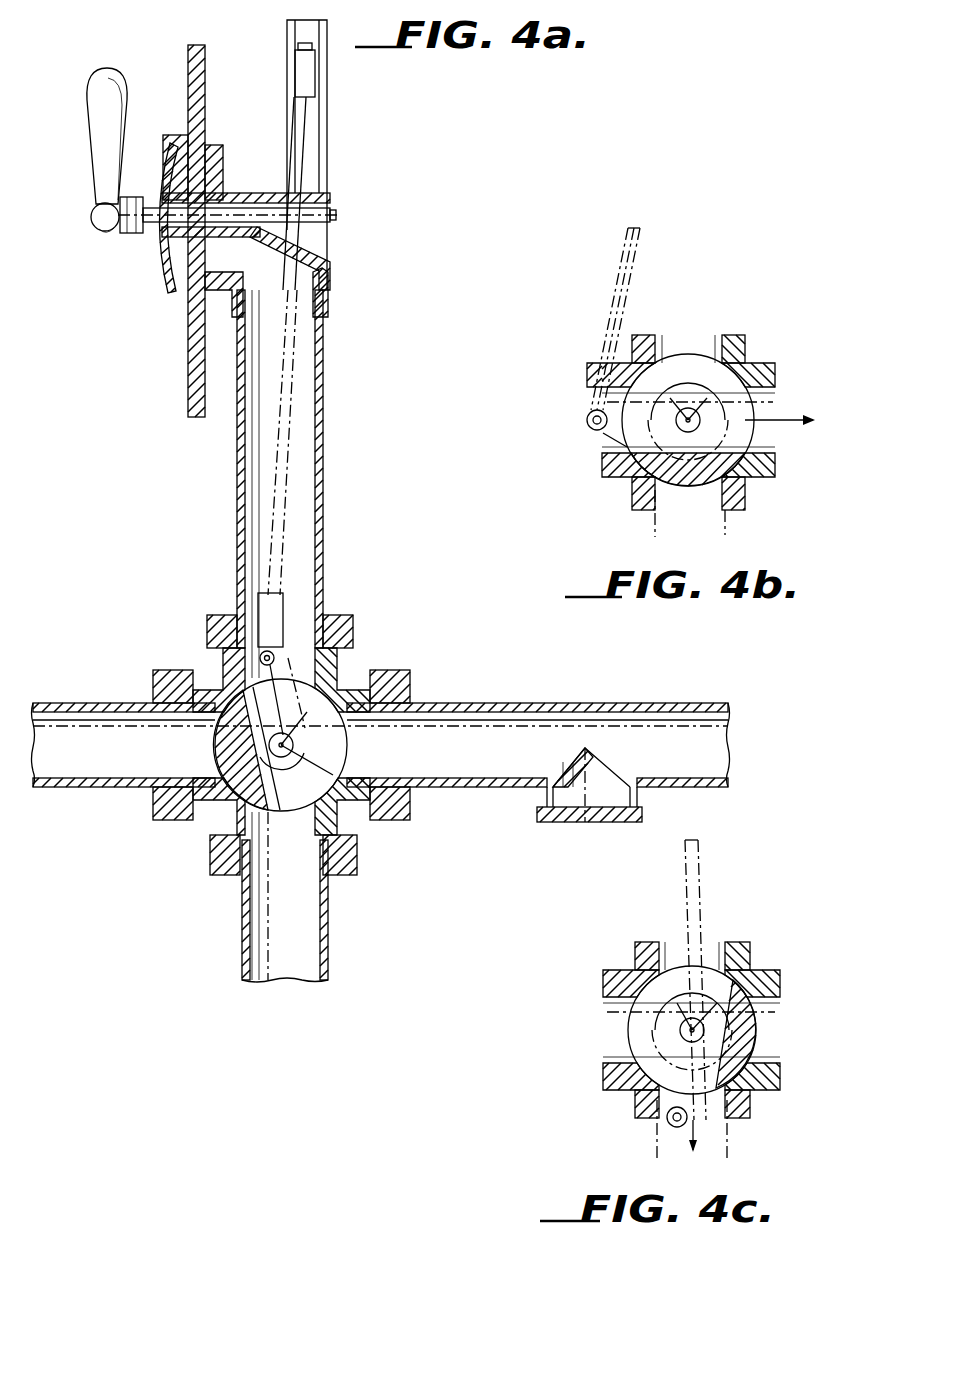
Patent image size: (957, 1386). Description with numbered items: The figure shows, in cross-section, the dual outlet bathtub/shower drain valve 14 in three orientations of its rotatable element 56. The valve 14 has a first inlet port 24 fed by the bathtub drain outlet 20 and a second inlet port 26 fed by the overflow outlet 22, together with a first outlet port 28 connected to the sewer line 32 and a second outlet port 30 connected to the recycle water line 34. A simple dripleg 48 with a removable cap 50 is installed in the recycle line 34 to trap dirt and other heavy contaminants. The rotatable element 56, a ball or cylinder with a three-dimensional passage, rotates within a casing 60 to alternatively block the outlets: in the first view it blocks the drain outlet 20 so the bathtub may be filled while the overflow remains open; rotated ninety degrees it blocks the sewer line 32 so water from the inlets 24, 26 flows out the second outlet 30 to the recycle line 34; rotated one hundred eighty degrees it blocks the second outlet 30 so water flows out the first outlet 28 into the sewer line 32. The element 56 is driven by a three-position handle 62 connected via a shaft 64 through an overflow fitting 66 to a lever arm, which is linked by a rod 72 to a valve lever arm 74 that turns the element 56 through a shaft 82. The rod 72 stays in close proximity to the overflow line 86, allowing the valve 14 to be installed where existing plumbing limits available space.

In FIG. 4A, the dual outlet bathtub/shower drain valve 14 is at (376, 648).
In FIG. 4B, the dual outlet bathtub/shower drain valve 14 is at (768, 325).
In FIG. 4C, the dual outlet bathtub/shower drain valve 14 is at (766, 925).
In FIG. 4A, the drain outlet 20 is at (328, 160).
In FIG. 4A, the overflow outlet 22 is at (330, 286).
In FIG. 4A, the first inlet port 24 is at (163, 821).
In FIG. 4A, the second inlet port 26 is at (348, 616).
In FIG. 4A, the first outlet port 28 is at (210, 860).
In FIG. 4A, the second outlet port 30 is at (404, 672).
In FIG. 4A, the sewer line 32 is at (330, 942).
In FIG. 4B, the sewer line 32 is at (725, 526).
In FIG. 4C, the sewer line 32 is at (660, 1130).
In FIG. 4A, the recycle water line 34 is at (653, 702).
In FIG. 4A, the dripleg 48 is at (546, 792).
In FIG. 4A, the removable cap 50 is at (587, 823).
In FIG. 4A, the rotatable element 56 is at (213, 748).
In FIG. 4B, the rotatable element 56 is at (745, 470).
In FIG. 4C, the rotatable element 56 is at (765, 1025).
In FIG. 4A, the casing 60 is at (222, 656).
In FIG. 4B, the casing 60 is at (745, 362).
In FIG. 4C, the casing 60 is at (752, 965).
In FIG. 4A, the handle 62 is at (88, 104).
In FIG. 4A, the shaft 64 is at (160, 246).
In FIG. 4A, the overflow fitting 66 is at (162, 276).
In FIG. 4A, the rod 72 is at (300, 120).
In FIG. 4B, the rod 72 is at (640, 247).
In FIG. 4C, the rod 72 is at (703, 873).
In FIG. 4A, the valve lever arm 74 is at (272, 653).
In FIG. 4B, the valve lever arm 74 is at (600, 440).
In FIG. 4C, the valve lever arm 74 is at (706, 1130).
In FIG. 4A, the shaft 82 is at (300, 745).
In FIG. 4A, the overflow line 86 is at (325, 455).